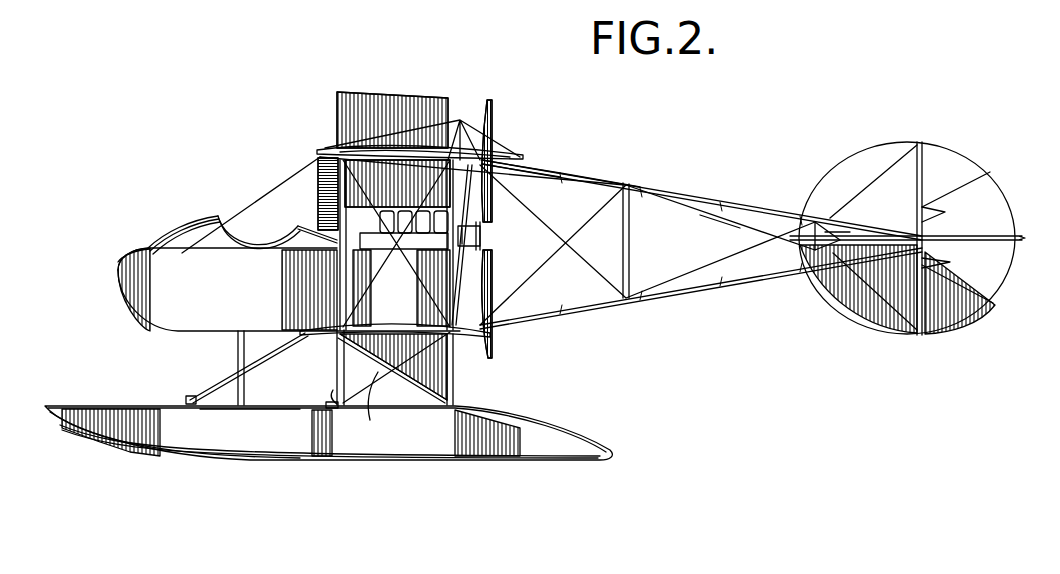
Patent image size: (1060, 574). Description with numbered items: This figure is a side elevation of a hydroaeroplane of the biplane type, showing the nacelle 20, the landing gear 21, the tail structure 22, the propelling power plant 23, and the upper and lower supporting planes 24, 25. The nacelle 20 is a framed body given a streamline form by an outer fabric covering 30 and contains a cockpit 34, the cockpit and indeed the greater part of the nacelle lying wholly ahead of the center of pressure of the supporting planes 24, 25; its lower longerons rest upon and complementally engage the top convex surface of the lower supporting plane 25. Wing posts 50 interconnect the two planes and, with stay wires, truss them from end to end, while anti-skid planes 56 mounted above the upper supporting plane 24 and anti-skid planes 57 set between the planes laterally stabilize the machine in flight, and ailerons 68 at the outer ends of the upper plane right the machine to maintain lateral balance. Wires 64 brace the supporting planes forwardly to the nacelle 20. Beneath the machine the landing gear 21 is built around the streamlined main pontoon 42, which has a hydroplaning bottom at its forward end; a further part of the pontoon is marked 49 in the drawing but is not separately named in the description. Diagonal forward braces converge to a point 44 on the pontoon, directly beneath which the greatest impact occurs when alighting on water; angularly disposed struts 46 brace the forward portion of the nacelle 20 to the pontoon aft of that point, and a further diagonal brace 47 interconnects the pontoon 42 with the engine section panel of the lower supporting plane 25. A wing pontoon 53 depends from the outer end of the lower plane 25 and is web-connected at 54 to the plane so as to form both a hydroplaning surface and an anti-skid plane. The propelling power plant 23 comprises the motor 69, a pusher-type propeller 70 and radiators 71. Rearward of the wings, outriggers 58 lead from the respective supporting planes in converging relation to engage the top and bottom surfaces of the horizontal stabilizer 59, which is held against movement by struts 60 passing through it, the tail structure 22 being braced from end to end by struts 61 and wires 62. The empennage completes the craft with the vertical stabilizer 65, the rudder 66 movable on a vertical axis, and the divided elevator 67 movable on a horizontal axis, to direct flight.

The nacelle 20 is at (157, 243).
The landing gear 21 is at (122, 404).
The tail structure 22 is at (702, 196).
The propelling power plant 23 is at (496, 222).
The upper supporting plane 24 is at (325, 145).
The lower supporting plane 25 is at (384, 324).
The outer fabric covering 30 is at (118, 270).
The cockpit 34 is at (232, 218).
The main float or pontoon 42 is at (250, 440).
The convergence point of forward braces 44 is at (183, 398).
The angularly disposed struts 46 is at (238, 352).
The diagonal brace 47 is at (330, 408).
The float bottom 49 is at (120, 442).
The wing posts 50 is at (450, 280).
The wing pontoons or floats 53 is at (364, 408).
The web connection 54 is at (427, 363).
The anti-skid planes 56 is at (355, 95).
The anti-skid planes 57 is at (418, 168).
The outriggers 58 is at (610, 173).
The horizontal stabilizer 59 is at (808, 226).
The struts 60 is at (842, 218).
The tail bracing struts 61 is at (630, 195).
The tail bracing wires 62 is at (738, 218).
The bracing wires 64 is at (268, 192).
The vertical stabilizer 65 is at (883, 152).
The rudder 66 is at (1005, 212).
The divided elevator 67 is at (1020, 240).
The boom strut 68 is at (497, 158).
The motor 69 is at (400, 210).
The propeller 70 is at (492, 106).
The radiators 71 is at (320, 162).